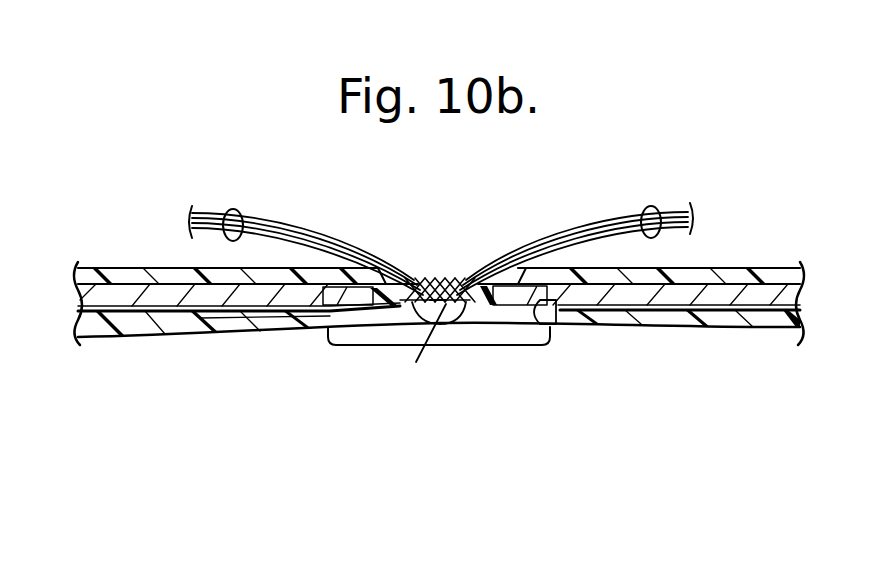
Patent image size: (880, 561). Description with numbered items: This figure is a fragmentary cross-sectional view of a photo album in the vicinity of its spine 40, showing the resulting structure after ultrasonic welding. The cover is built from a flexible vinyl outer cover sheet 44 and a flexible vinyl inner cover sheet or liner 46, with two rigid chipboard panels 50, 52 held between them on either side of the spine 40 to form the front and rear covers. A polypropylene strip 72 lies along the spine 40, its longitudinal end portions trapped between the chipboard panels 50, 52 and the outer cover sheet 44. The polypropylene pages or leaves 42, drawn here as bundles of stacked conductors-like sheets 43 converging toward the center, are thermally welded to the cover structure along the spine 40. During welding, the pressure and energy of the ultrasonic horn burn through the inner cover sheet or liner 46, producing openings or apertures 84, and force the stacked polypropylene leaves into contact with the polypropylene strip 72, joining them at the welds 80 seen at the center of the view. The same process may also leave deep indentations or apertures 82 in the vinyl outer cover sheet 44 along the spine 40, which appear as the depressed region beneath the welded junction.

The spine 40 is at (467, 342).
The polypropylene pages or leaves 42 is at (232, 208).
The conductors 43 is at (425, 282).
The outer cover sheet 44 is at (707, 327).
The inner cover sheet or liner 46 is at (160, 273).
The rigid panel 50 is at (548, 333).
The rigid panel 52 is at (350, 283).
The polypropylene strip 72 is at (278, 313).
The welds 80 is at (435, 283).
The deep indentations or apertures 82 is at (452, 324).
The openings or apertures 84 is at (438, 302).